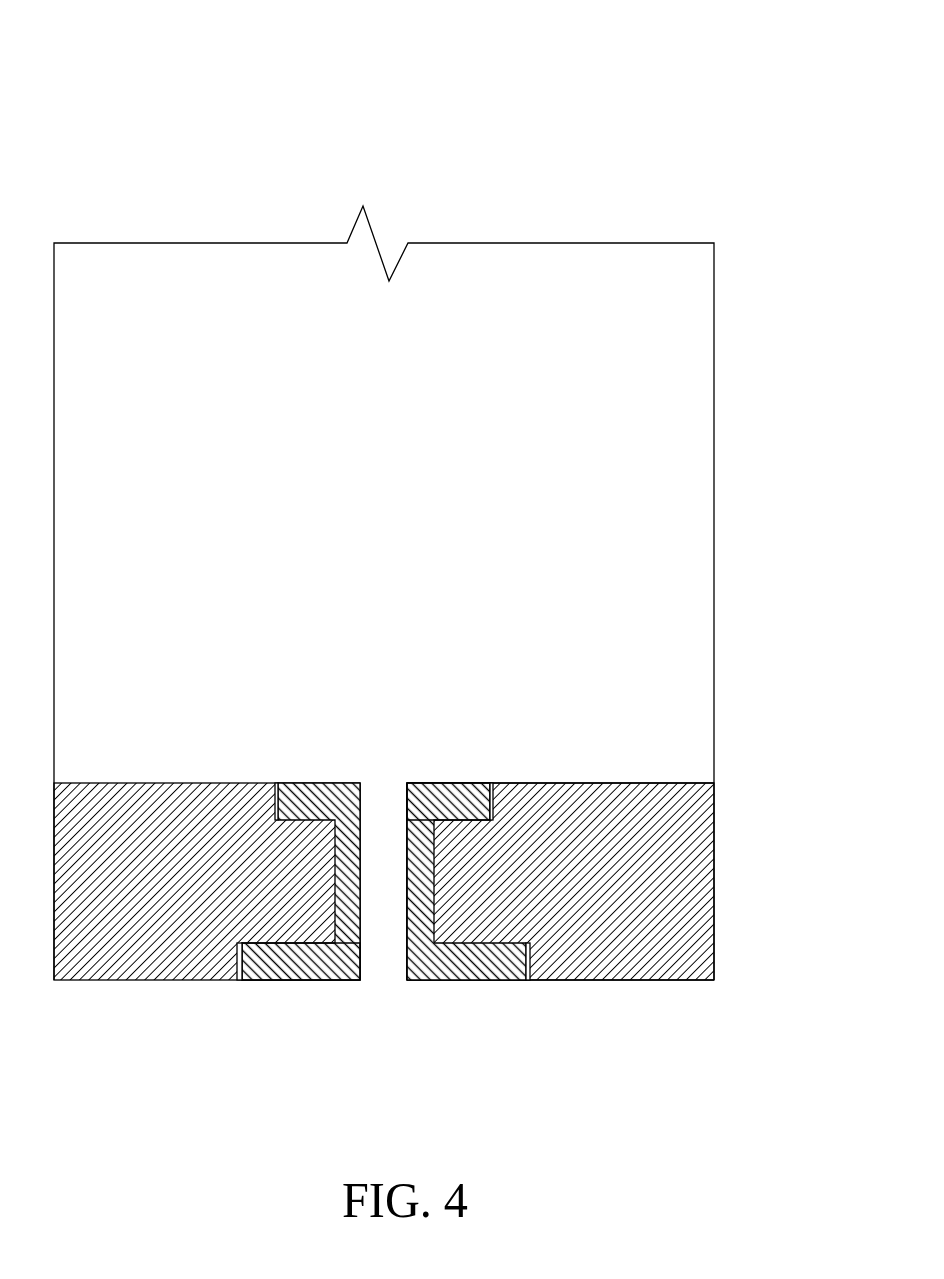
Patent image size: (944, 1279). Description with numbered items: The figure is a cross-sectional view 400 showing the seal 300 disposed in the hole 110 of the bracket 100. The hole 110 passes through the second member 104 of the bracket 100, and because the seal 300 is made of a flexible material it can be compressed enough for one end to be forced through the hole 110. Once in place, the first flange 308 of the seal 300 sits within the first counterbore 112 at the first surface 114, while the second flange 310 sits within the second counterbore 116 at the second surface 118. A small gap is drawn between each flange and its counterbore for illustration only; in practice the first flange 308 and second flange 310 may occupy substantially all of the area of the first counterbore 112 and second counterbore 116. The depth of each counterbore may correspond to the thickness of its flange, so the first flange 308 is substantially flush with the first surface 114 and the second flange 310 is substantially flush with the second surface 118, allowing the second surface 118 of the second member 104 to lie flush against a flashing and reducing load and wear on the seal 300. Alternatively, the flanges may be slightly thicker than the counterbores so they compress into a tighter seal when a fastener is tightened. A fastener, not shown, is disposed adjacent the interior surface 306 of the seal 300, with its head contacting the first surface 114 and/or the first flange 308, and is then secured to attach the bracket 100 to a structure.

The cross-sectional view 400 is at (686, 56).
The bracket 100 is at (662, 200).
The second member 104 is at (714, 888).
The hole 110 is at (385, 1000).
The first counterbore 112 is at (493, 800).
The first surface 114 is at (675, 782).
The second counterbore 116 is at (237, 980).
The second surface 118 is at (662, 980).
The seal 300 is at (478, 1009).
The interior surface 306 is at (407, 798).
The first flange 308 is at (472, 782).
The second flange 310 is at (252, 980).